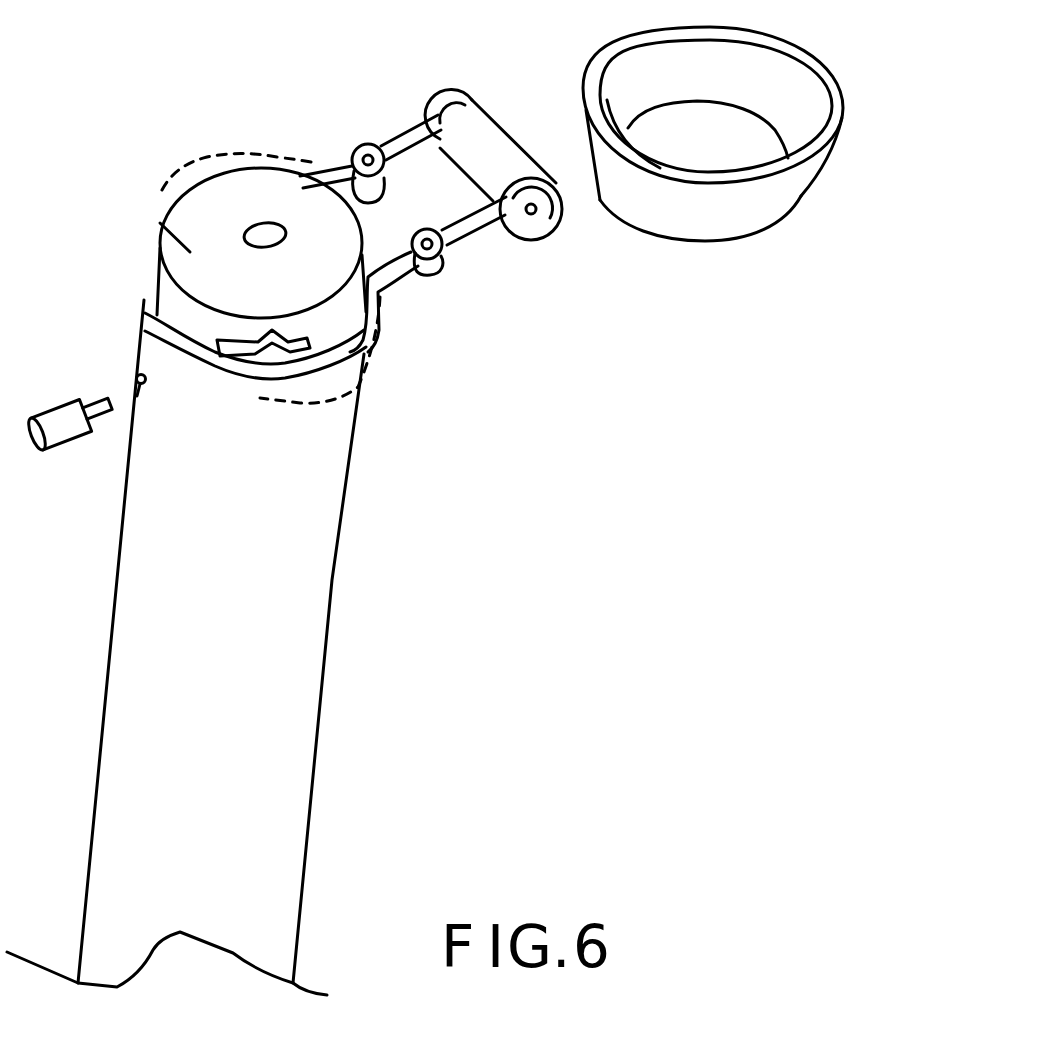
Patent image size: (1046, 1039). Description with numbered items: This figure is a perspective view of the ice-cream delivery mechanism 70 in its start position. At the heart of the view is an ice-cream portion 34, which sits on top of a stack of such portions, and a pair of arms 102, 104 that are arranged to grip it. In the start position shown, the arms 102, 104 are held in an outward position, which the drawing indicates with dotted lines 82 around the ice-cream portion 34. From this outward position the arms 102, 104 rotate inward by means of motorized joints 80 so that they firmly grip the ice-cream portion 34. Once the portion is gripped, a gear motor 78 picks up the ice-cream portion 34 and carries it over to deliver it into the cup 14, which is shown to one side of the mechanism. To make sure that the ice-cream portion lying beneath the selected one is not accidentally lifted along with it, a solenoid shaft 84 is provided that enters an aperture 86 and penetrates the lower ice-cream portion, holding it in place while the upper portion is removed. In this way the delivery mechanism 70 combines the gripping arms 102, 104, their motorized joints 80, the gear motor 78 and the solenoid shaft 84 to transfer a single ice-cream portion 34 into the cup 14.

The cup 14 is at (803, 100).
The ice-cream portion 34 is at (157, 222).
The ice-cream delivery mechanism 70 is at (427, 214).
The gear motor 78 is at (471, 127).
The motorized joints 80 is at (363, 147).
The dotted lines 82 is at (207, 157).
The solenoid shaft 84 is at (67, 447).
The aperture 86 is at (127, 425).
The arm 102 is at (414, 290).
The arm 104 is at (337, 163).